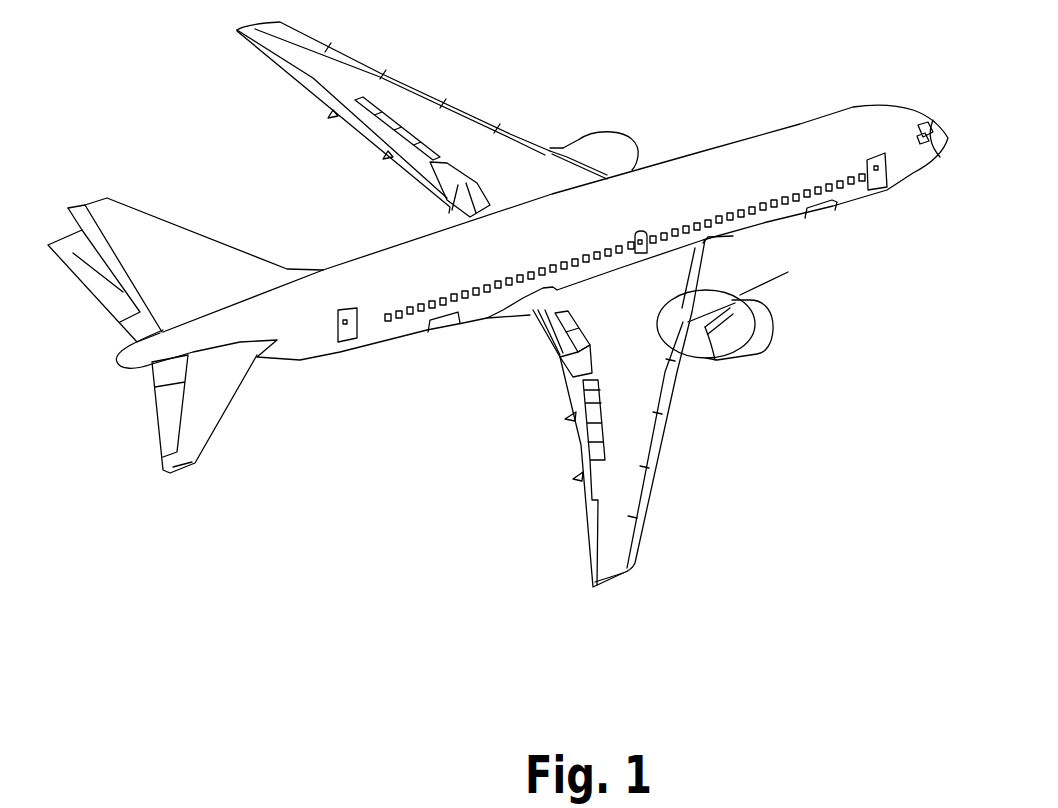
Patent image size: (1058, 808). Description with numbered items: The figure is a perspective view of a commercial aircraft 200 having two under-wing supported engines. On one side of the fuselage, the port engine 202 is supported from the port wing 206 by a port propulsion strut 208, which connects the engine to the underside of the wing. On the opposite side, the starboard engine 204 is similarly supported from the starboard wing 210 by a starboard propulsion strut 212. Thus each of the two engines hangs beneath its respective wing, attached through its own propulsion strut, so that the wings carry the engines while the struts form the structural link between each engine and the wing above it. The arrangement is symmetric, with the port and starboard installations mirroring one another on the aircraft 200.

The aircraft 200 is at (498, 298).
The port engine 202 is at (630, 135).
The starboard engine 204 is at (772, 342).
The port wing 206 is at (460, 122).
The port propulsion strut 208 is at (578, 148).
The starboard wing 210 is at (640, 440).
The starboard propulsion strut 212 is at (735, 335).